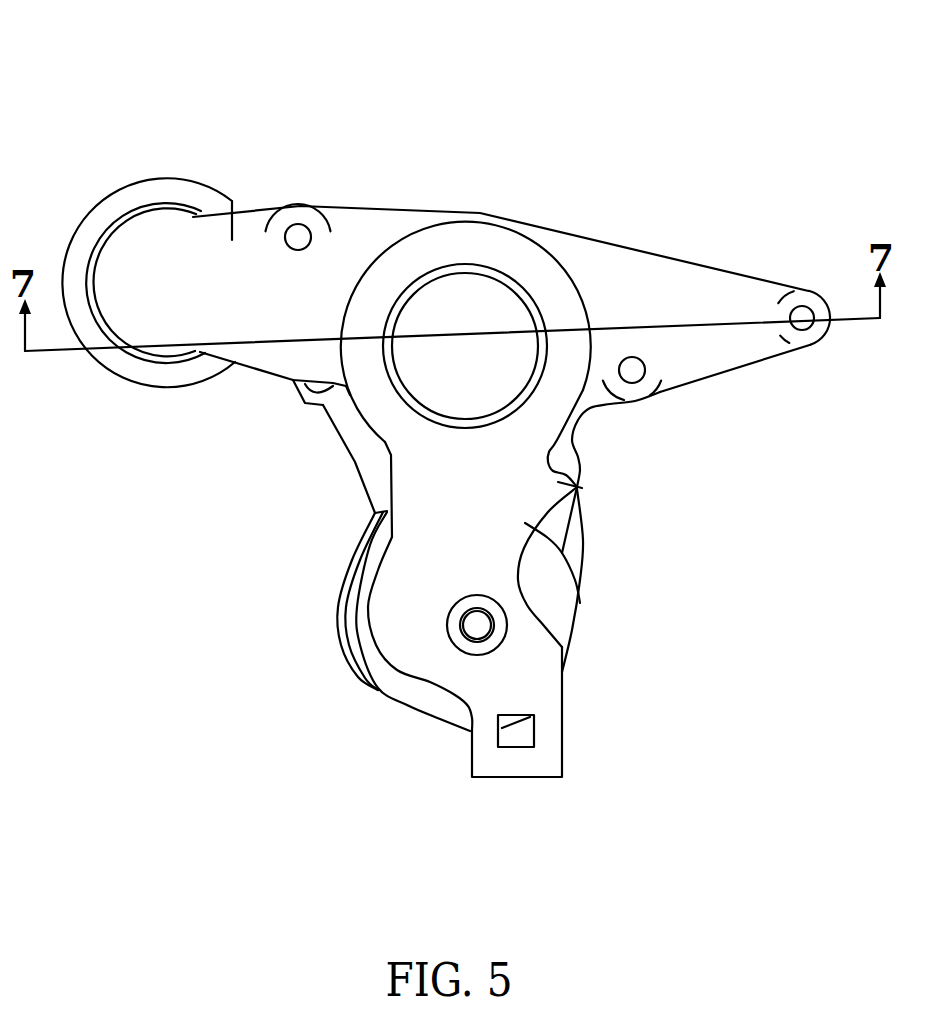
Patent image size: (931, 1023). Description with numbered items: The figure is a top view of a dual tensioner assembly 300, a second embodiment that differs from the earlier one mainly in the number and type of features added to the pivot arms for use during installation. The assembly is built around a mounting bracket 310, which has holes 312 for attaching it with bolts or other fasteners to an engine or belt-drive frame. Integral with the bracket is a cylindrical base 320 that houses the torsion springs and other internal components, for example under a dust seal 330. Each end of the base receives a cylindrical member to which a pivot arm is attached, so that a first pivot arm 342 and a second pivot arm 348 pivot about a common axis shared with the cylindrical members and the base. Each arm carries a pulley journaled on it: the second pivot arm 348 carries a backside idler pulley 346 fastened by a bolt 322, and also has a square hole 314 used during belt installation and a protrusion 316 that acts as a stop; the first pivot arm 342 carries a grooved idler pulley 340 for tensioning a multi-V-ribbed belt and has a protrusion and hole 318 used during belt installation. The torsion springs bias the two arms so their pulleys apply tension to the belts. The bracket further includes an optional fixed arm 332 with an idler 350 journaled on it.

The dual tensioner assembly 300 is at (631, 99).
The mounting bracket 310 is at (620, 267).
The holes 312 is at (800, 311).
The square hole 314 is at (523, 737).
The protrusion 316 is at (580, 493).
The protrusion and hole 318 is at (310, 393).
The cylindrical base 320 is at (388, 243).
The bolt 322 is at (477, 625).
The dust seal 330 is at (463, 297).
The fixed arm 332 is at (233, 198).
The grooved idler pulley 340 is at (340, 622).
The first pivot arm 342 is at (377, 480).
The backside idler pulley 346 is at (417, 720).
The second pivot arm 348 is at (413, 457).
The idler 350 is at (177, 178).